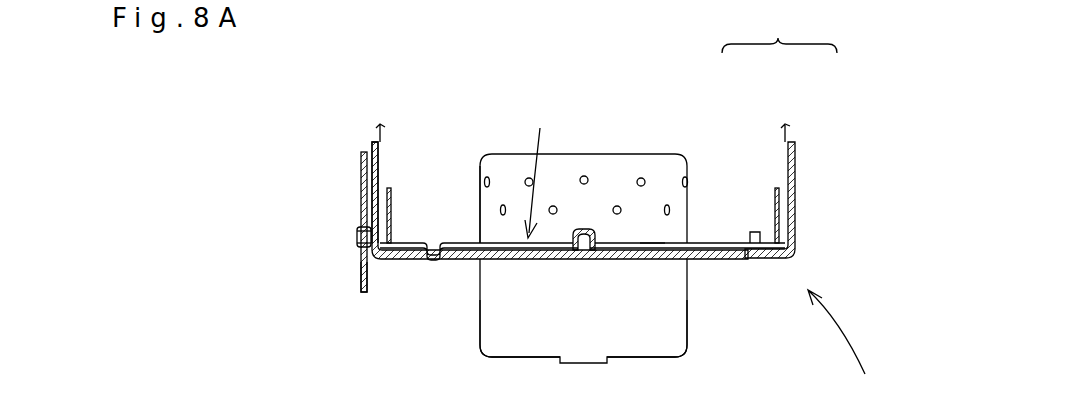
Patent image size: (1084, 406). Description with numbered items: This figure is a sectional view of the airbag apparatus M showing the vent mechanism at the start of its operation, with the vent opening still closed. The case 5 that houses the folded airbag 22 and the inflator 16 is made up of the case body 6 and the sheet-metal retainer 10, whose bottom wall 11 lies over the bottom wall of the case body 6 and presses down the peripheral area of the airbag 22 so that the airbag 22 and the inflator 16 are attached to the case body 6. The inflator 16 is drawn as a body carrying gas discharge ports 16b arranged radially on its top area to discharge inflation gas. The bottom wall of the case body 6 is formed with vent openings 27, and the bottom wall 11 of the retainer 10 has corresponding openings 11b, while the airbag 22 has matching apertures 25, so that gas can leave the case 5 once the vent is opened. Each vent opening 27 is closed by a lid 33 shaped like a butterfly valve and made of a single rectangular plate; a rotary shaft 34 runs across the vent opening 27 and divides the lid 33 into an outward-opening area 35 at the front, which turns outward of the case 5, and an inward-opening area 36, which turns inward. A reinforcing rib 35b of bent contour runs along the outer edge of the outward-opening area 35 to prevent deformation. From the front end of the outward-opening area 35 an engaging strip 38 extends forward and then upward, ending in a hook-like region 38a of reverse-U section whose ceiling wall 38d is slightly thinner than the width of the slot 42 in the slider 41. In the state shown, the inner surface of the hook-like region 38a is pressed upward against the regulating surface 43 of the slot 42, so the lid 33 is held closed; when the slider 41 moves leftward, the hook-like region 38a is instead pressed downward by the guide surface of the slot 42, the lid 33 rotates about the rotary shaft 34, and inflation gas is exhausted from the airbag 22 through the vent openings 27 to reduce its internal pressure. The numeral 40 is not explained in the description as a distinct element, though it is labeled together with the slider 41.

The case 5 is at (779, 135).
The case body 6 is at (795, 175).
The retainer 10 is at (775, 203).
The bottom wall 11 is at (398, 243).
The openings 11b is at (713, 243).
The inflator 16 is at (675, 298).
The gas discharge ports 16b is at (584, 176).
The airbag 22 is at (380, 142).
The apertures 25 is at (483, 240).
The vent openings 27 is at (652, 242).
The lid 33 is at (538, 172).
The rotary shaft 34 is at (588, 229).
The outward-opening area 35 is at (496, 260).
The reinforcing rib 35b is at (428, 243).
The inward-opening area 36 is at (638, 260).
The engaging strip 38 is at (398, 260).
The hook-like region 38a is at (357, 244).
The ceiling wall 38d is at (359, 233).
The terminal plate 40 is at (329, 175).
The slider 41 is at (362, 170).
The slots 42 is at (360, 228).
The regulating surface 43 is at (362, 270).
The airbag apparatus M is at (842, 347).